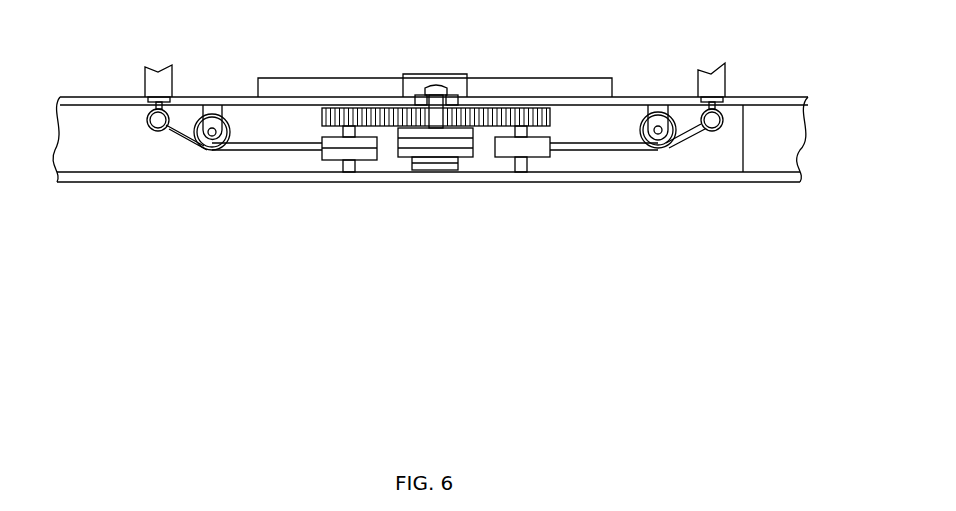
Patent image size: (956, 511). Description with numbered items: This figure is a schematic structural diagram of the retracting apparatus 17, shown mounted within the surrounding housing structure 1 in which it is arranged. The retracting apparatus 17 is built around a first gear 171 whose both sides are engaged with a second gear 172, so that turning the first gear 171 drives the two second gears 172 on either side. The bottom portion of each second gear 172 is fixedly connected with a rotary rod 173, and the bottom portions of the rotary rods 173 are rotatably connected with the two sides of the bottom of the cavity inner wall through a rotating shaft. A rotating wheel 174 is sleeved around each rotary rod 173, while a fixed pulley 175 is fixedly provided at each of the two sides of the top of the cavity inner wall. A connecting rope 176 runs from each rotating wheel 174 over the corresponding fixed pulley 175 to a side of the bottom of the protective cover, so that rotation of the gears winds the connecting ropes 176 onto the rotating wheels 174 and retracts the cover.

The frame rail 1 is at (82, 97).
The retracting apparatus 17 is at (410, 189).
The first gear 171 is at (463, 117).
The second gear 172 is at (523, 127).
The rotary rod 173 is at (355, 162).
The rotating wheel 174 is at (330, 153).
The fixed pulley 175 is at (212, 150).
The connecting rope 176 is at (172, 175).